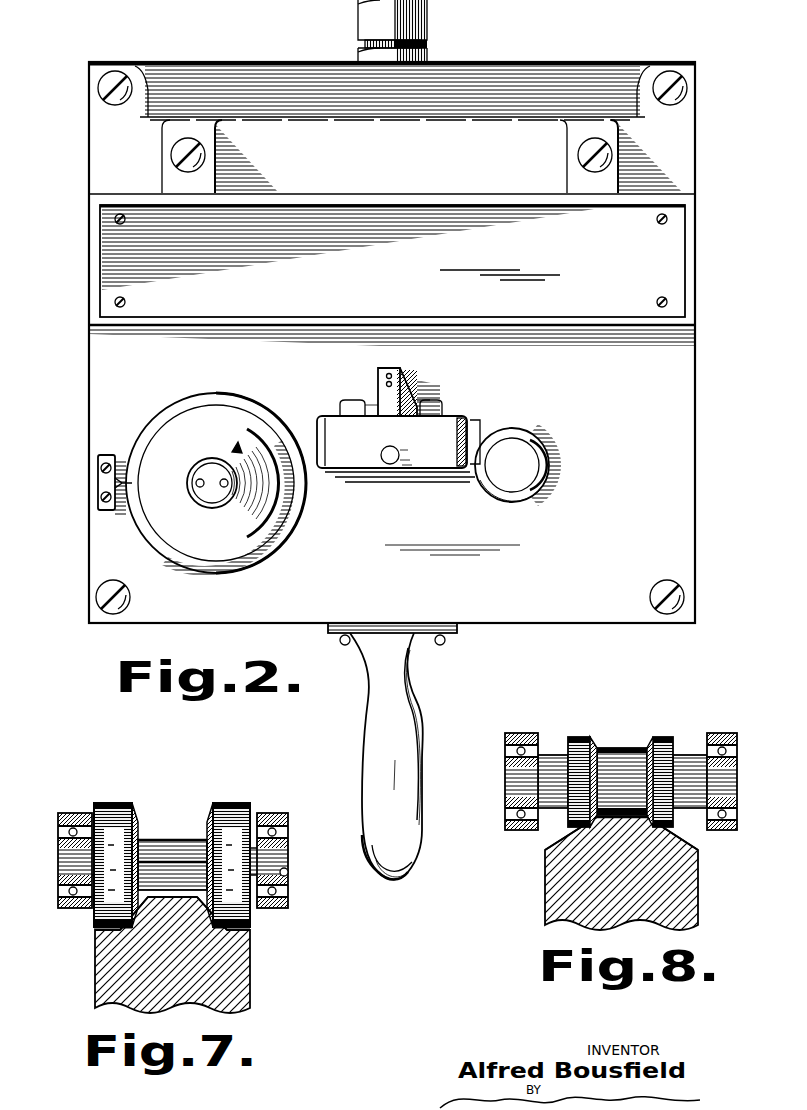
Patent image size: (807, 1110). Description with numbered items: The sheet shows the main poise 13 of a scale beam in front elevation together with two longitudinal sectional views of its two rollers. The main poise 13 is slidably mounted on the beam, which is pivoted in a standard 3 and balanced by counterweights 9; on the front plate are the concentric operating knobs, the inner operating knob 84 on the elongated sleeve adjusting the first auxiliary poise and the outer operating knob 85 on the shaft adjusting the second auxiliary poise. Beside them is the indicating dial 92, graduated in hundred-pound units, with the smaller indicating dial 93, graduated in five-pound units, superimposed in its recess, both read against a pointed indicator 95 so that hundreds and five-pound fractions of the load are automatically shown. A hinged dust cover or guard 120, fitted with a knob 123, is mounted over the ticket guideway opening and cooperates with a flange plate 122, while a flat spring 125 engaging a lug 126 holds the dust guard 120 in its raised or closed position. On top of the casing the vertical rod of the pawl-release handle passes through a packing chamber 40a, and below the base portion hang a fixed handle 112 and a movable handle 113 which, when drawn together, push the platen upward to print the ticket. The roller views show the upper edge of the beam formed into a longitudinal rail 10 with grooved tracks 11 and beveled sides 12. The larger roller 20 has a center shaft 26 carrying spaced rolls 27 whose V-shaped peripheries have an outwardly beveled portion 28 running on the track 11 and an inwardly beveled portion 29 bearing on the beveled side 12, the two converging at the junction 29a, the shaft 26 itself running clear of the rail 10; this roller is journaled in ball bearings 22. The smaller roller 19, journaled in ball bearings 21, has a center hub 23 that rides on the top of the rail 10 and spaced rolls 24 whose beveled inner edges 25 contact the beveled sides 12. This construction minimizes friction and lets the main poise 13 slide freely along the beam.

In FIG. 2, the main poise 13 is at (686, 449).
In FIG. 2, the packing chamber 40a is at (420, 47).
In FIG. 2, the indicating dial 93 is at (157, 447).
In FIG. 2, the indicating dial 92 is at (137, 508).
In FIG. 2, the pointed indicator 95 is at (108, 481).
In FIG. 2, the counterweights 9 is at (212, 370).
In FIG. 2, the dust cover or guard 120 is at (364, 452).
In FIG. 2, the flange plate 122 is at (462, 422).
In FIG. 2, the knob 123 is at (393, 462).
In FIG. 2, the flat spring 125 is at (385, 385).
In FIG. 2, the lug 126 is at (414, 393).
In FIG. 2, the operating knob 85 is at (530, 470).
In FIG. 2, the operating knob 84 is at (504, 495).
In FIG. 2, the longitudinal rail 10 is at (512, 392).
In FIG. 7, the longitudinal rail 10 is at (95, 963).
In FIG. 8, the longitudinal rail 10 is at (592, 850).
In FIG. 2, the fixed handle 112 is at (392, 745).
In FIG. 2, the movable handle 113 is at (373, 872).
In FIG. 2, the standard 3 is at (391, 890).
In FIG. 7, the tracks or runways 11 is at (97, 935).
In FIG. 8, the tracks or runways 11 is at (608, 818).
In FIG. 7, the beveled sides 12 is at (95, 920).
In FIG. 8, the beveled sides 12 is at (598, 818).
In FIG. 7, the larger roller 20 is at (139, 843).
In FIG. 7, the center shaft 26 is at (174, 840).
In FIG. 7, the roll portions or rolls 27 is at (139, 840).
In FIG. 7, the outwardly beveled portion 28 is at (108, 803).
In FIG. 7, the inwardly beveled portion 29 is at (134, 822).
In FIG. 7, the junction 29a is at (97, 950).
In FIG. 7, the ball bearings 22 is at (64, 813).
In FIG. 8, the ball bearings 21 is at (518, 733).
In FIG. 8, the beveled inner edges 25 is at (586, 737).
In FIG. 8, the roll portions or rolls 24 is at (585, 830).
In FIG. 8, the center hub 23 is at (623, 748).
In FIG. 8, the smaller roller 19 is at (690, 755).